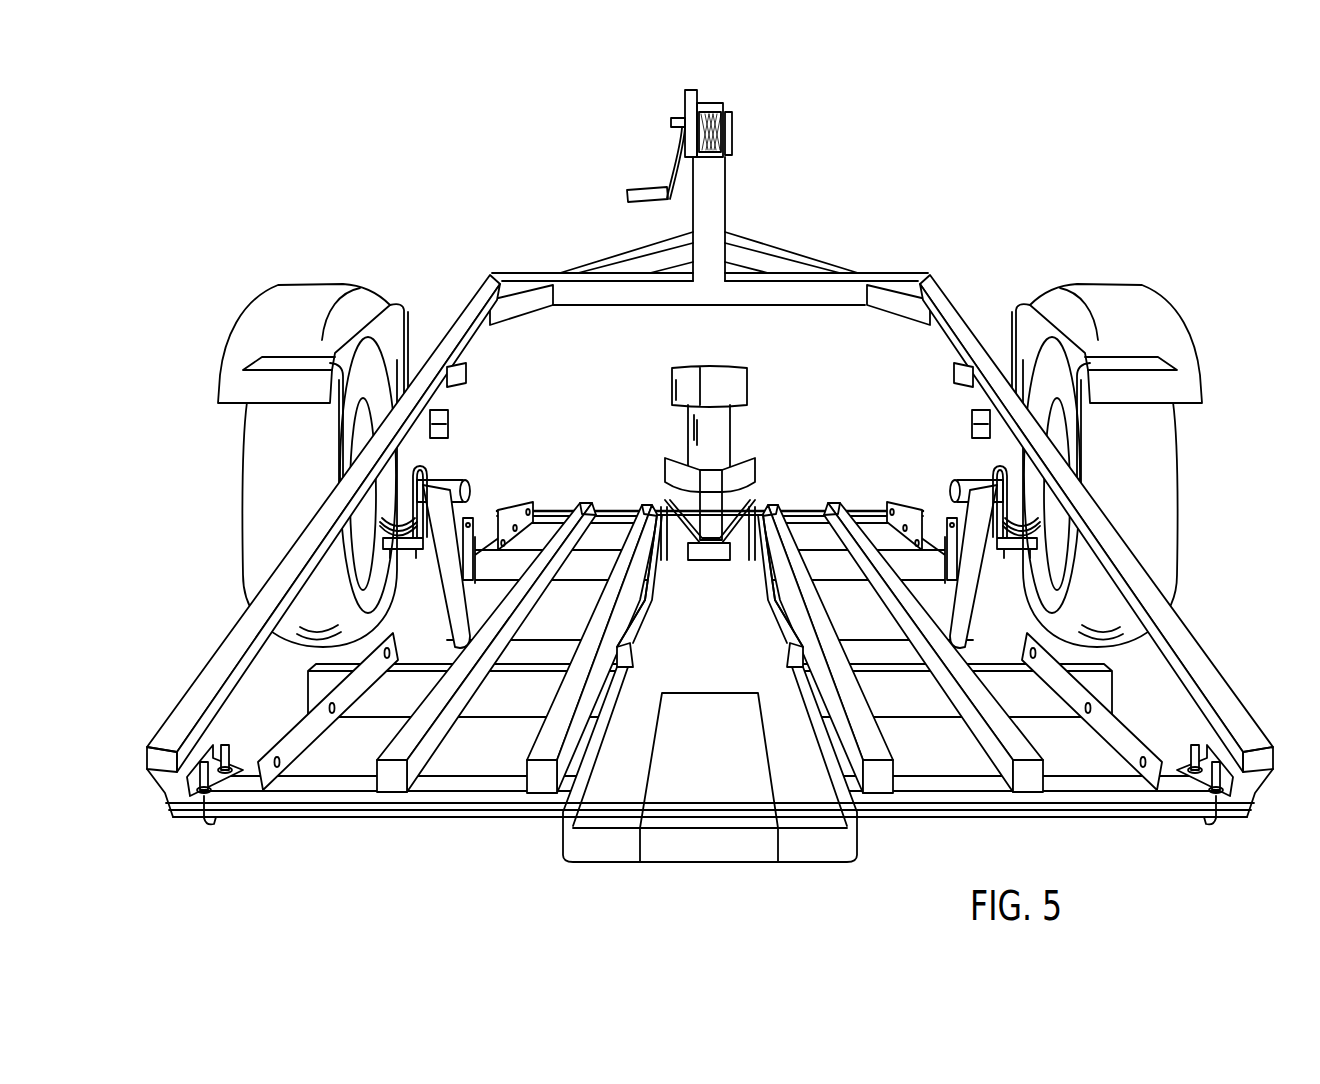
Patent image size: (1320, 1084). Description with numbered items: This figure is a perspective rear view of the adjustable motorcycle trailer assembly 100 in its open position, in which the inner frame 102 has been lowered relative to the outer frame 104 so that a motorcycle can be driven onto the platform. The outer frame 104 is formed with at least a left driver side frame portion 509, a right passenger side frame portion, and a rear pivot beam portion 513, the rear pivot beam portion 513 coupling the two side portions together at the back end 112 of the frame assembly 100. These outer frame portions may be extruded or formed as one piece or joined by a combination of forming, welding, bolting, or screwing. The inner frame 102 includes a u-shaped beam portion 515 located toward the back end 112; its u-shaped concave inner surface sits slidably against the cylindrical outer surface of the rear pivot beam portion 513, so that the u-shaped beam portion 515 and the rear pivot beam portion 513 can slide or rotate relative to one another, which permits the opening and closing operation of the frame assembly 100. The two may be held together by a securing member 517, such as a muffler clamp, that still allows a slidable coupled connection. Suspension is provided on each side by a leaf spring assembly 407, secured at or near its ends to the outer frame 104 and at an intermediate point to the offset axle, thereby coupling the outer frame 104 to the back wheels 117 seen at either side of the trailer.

The trailer assembly 100 is at (904, 216).
The inner frame 102 is at (552, 528).
The outer frame 104 is at (1163, 623).
The back end 112 is at (498, 820).
The back wheels 117 is at (270, 476).
The leaf spring assembly 407 is at (1005, 554).
The left driver side frame portion 509 is at (456, 313).
The rear pivot beam portion 513 is at (1125, 815).
The u-shaped beam portion 515 is at (950, 782).
The securing member 517 is at (223, 793).